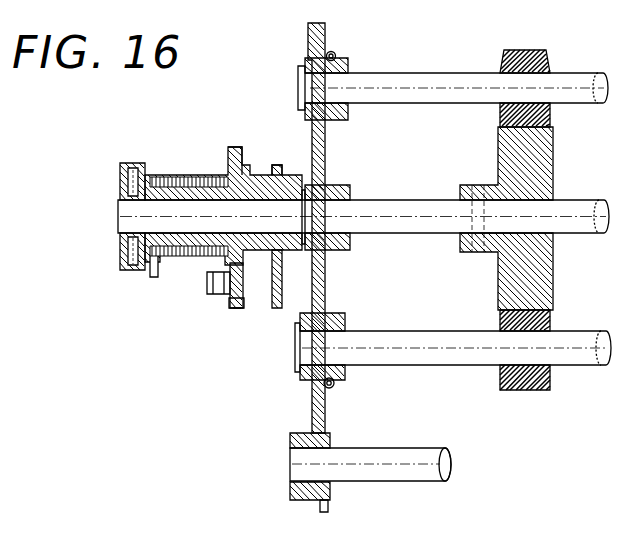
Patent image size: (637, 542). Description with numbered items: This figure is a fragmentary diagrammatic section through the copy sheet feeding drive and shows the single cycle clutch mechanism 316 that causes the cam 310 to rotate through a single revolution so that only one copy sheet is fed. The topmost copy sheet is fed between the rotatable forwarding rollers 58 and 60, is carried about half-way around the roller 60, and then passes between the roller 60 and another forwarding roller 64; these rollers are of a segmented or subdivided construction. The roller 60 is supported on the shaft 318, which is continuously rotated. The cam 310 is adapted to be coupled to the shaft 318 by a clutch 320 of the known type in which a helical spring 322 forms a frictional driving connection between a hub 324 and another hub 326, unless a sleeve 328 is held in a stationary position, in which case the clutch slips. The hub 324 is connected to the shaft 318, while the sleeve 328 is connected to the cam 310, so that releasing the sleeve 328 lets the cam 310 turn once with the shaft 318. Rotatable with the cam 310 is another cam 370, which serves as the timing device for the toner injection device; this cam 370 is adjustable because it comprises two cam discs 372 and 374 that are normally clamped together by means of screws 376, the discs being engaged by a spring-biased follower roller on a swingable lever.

The forwarding roller 58 is at (519, 50).
The forwarding roller 60 is at (552, 147).
The forwarding roller 64 is at (525, 390).
The cam 310 is at (276, 308).
The mechanism 316 is at (171, 241).
The shaft 318 is at (395, 200).
The clutch 320 is at (125, 152).
The helical spring 322 is at (181, 184).
The hub 324 is at (150, 194).
The hub 326 is at (211, 177).
The sleeve 328 is at (176, 175).
The cam 370 is at (209, 336).
The cam disc 372 is at (242, 308).
The cam disc 374 is at (231, 306).
The screws 376 is at (207, 290).